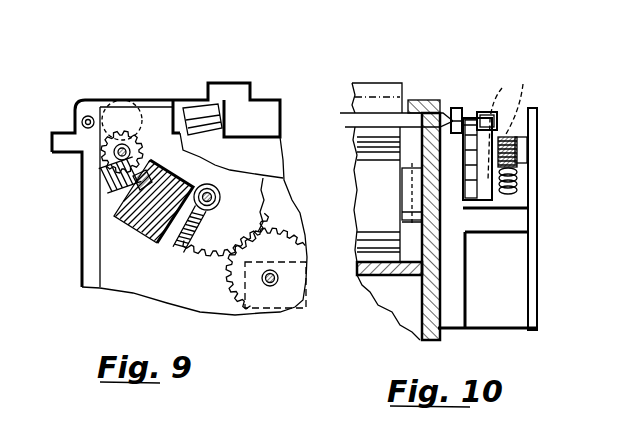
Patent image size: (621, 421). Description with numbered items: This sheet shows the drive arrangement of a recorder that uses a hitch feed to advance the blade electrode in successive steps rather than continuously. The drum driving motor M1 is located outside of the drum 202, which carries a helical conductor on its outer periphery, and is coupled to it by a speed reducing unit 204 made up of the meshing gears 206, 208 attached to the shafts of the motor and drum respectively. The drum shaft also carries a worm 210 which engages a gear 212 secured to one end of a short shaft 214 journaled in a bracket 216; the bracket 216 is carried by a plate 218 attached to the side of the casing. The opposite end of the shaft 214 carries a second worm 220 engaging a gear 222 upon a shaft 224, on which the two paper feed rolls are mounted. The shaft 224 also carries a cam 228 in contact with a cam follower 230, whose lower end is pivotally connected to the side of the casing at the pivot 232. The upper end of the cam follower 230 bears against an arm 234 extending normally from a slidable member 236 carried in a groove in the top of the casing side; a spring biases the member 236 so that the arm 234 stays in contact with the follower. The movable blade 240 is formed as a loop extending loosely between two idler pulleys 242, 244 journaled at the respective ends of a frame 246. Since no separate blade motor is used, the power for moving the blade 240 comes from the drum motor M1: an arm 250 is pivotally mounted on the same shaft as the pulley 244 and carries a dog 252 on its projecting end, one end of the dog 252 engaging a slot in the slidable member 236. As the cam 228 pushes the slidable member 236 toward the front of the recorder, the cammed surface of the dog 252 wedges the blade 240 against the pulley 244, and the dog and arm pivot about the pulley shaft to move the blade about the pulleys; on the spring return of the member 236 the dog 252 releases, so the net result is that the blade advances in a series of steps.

In FIG. 9, the drum 202 is at (240, 187).
In FIG. 9, the speed reducing unit 204 is at (212, 303).
In FIG. 9, the gear 206 is at (280, 250).
In FIG. 10, the gear 206 is at (367, 233).
In FIG. 9, the gear 208 is at (188, 247).
In FIG. 9, the worm 210 is at (211, 218).
In FIG. 9, the gear 212 is at (200, 258).
In FIG. 9, the short shaft 214 is at (133, 195).
In FIG. 9, the bracket 216 is at (140, 228).
In FIG. 10, the plate 218 is at (537, 128).
In FIG. 9, the second worm 220 is at (103, 190).
In FIG. 10, the second worm 220 is at (493, 198).
In FIG. 10, the gear 222 is at (518, 137).
In FIG. 9, the shaft 224 is at (120, 152).
In FIG. 10, the cam 228 is at (532, 114).
In FIG. 9, the cam follower 230 is at (70, 132).
In FIG. 10, the cam follower 230 is at (492, 110).
In FIG. 9, the pivot 232 is at (118, 192).
In FIG. 10, the pivot 232 is at (485, 208).
In FIG. 9, the arm 234 is at (86, 116).
In FIG. 10, the arm 234 is at (473, 107).
In FIG. 10, the slidable member 236 is at (458, 108).
In FIG. 9, the movable blade 240 is at (180, 110).
In FIG. 10, the movable blade 240 is at (360, 118).
In FIG. 9, the pulley 242 is at (222, 125).
In FIG. 9, the pulley 244 is at (175, 128).
In FIG. 10, the pulley 244 is at (412, 135).
In FIG. 10, the frame 246 is at (415, 107).
In FIG. 10, the arm 250 is at (428, 110).
In FIG. 10, the dog 252 is at (405, 150).
In FIG. 9, the drum driving motor M1 is at (273, 312).